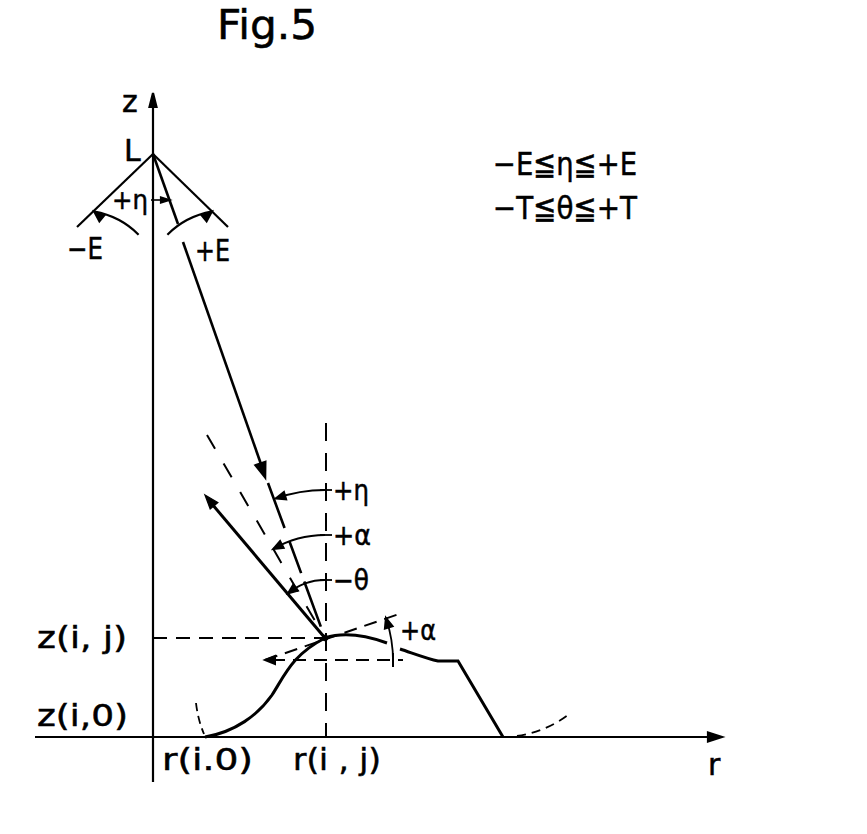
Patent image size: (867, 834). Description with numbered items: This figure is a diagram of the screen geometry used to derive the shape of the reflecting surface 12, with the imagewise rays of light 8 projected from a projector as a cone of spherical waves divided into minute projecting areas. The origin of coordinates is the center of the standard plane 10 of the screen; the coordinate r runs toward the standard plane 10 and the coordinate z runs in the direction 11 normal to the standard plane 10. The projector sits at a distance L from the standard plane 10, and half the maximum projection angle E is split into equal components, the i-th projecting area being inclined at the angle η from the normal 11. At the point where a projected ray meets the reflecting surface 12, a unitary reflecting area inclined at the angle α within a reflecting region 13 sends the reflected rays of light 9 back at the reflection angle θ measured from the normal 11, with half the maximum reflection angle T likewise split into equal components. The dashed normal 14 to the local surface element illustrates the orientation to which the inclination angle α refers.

The imagewise rays of light 8 is at (233, 382).
The reflected rays of light 9 is at (236, 538).
The standard plane 10 is at (610, 737).
The direction normal to the standard plane 11 is at (328, 448).
The reflecting surface 12 is at (303, 633).
The reflecting region 13 is at (438, 660).
The surface normal 14 is at (218, 468).